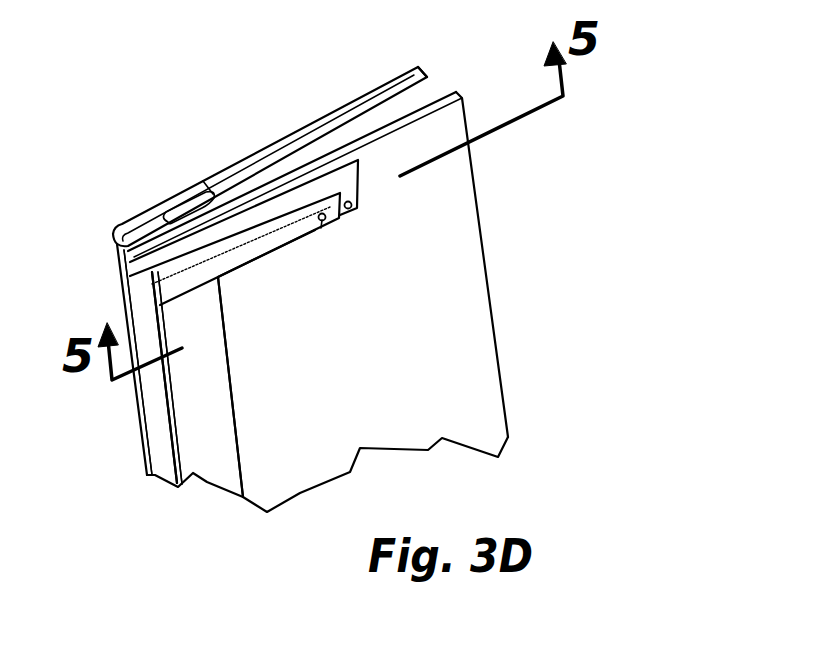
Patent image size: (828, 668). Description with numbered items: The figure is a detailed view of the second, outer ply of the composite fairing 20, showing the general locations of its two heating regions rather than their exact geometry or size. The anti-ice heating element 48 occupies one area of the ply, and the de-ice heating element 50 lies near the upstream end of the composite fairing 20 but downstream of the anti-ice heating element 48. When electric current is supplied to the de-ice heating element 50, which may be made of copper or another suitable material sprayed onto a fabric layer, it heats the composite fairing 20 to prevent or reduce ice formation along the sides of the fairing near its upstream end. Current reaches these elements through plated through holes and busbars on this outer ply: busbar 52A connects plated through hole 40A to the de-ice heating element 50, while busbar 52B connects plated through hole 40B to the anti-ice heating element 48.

The composite fairing 20 is at (567, 258).
The plated through hole 40A is at (321, 221).
The plated through hole 40B is at (352, 203).
The anti-ice heating element 48 is at (148, 425).
The de-ice heating element 50 is at (217, 447).
The busbar 52A is at (300, 229).
The busbar 52B is at (182, 254).